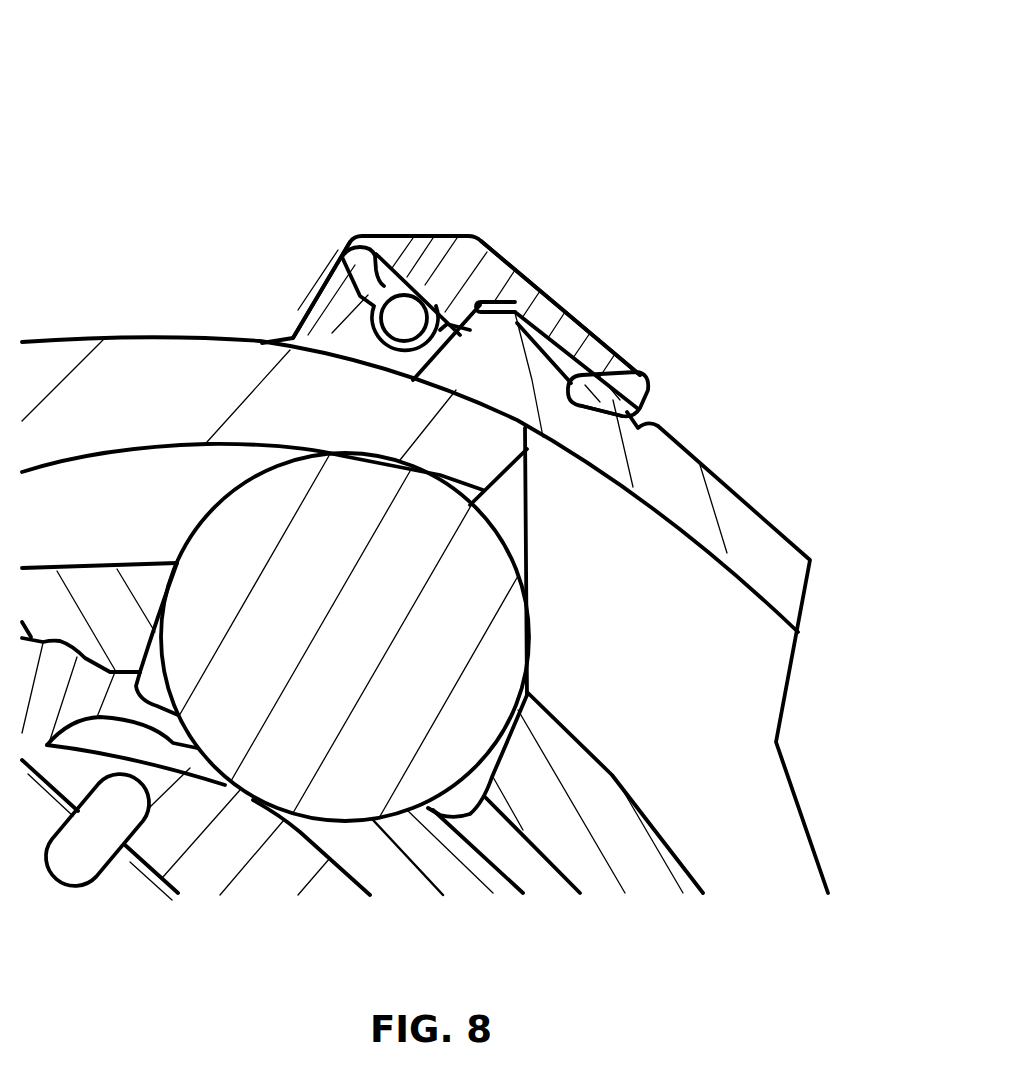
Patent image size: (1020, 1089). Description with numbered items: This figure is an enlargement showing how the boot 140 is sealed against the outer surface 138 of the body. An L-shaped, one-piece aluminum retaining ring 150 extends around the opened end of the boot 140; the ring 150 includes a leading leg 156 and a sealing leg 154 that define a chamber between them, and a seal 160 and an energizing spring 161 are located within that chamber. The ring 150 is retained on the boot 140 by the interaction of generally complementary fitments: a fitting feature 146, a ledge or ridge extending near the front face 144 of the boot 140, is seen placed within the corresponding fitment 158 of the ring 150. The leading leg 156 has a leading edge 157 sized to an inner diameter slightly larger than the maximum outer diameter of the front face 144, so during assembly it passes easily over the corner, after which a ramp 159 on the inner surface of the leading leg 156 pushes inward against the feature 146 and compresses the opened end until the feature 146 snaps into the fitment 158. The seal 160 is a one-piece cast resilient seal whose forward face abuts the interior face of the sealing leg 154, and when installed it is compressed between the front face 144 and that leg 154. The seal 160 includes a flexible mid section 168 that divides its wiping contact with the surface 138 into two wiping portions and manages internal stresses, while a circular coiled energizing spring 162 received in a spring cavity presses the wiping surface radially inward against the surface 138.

The outer surface 138 is at (67, 340).
The boot 140 is at (772, 557).
The front face 144 is at (460, 337).
The fitting feature 146 is at (593, 350).
The retaining ring 150 is at (518, 318).
The sealing leg 154 is at (338, 323).
The leading leg 156 is at (631, 374).
The leading edge 157 is at (633, 374).
The fitment 158 is at (522, 306).
The ramp 159 is at (630, 416).
The seal 160 is at (335, 322).
The energizing spring 161 is at (383, 287).
The energizing spring 162 is at (409, 296).
The flexible mid section 168 is at (342, 257).